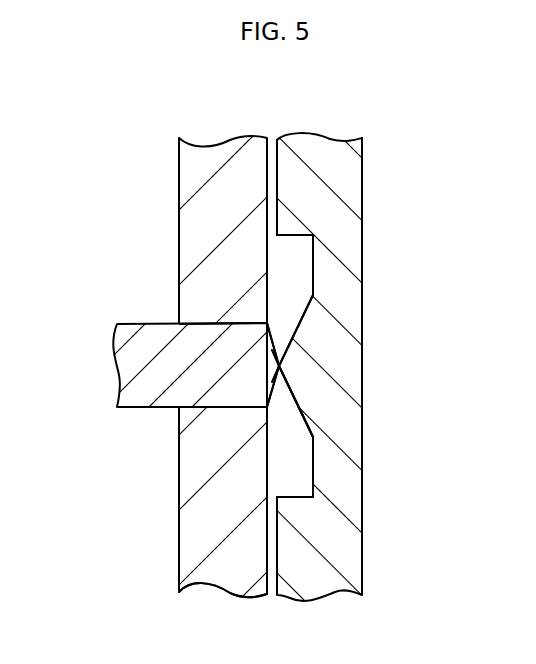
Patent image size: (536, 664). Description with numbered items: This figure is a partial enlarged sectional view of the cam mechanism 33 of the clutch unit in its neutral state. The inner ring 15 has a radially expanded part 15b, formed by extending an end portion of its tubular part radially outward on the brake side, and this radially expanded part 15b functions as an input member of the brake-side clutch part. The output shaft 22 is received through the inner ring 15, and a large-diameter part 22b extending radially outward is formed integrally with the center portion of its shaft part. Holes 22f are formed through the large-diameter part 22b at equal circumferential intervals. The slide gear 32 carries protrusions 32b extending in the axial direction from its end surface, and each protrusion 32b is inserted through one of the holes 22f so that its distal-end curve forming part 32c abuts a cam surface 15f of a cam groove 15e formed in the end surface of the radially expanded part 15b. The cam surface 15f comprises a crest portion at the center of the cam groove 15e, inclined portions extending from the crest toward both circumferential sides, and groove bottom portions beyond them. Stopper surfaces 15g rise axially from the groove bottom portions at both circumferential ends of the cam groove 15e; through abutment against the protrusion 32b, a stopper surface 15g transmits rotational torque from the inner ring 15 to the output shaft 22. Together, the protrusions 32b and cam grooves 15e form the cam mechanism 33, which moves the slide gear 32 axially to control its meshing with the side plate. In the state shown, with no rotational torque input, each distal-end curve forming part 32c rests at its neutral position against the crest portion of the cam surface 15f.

The inner ring 15 is at (378, 277).
The radially expanded part 15b is at (322, 157).
The cam groove 15e is at (289, 320).
The cam surface 15f is at (296, 412).
The stopper surface 15g is at (292, 237).
The output shaft 22 is at (220, 143).
The large-diameter part 22b is at (222, 568).
The hole 22f is at (253, 322).
The slide gear 32 is at (112, 337).
The protrusion 32b is at (218, 372).
The distal-end curve forming part 32c is at (276, 393).
The cam mechanism 33 is at (287, 423).